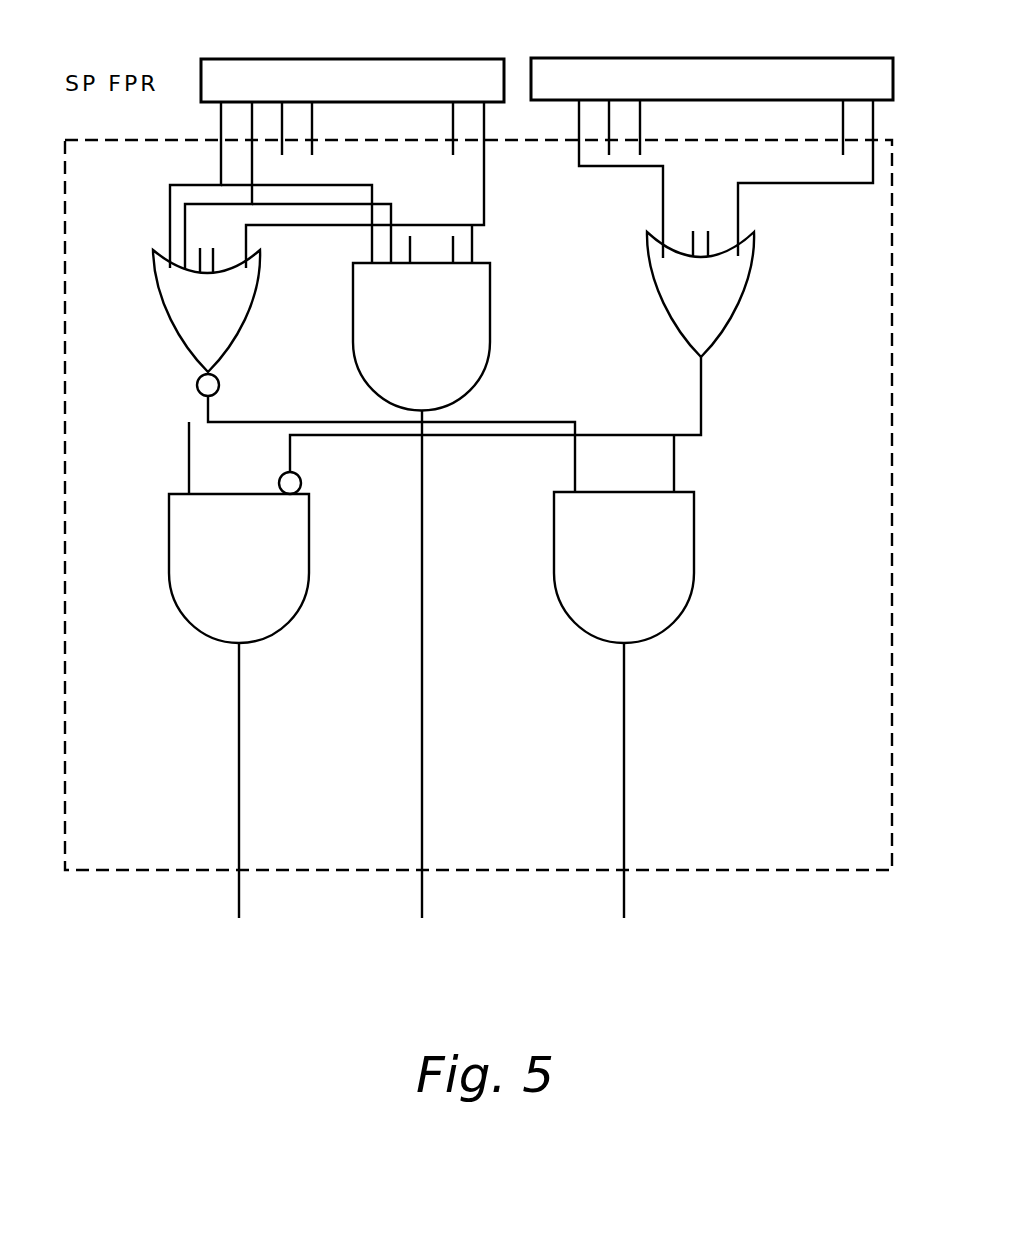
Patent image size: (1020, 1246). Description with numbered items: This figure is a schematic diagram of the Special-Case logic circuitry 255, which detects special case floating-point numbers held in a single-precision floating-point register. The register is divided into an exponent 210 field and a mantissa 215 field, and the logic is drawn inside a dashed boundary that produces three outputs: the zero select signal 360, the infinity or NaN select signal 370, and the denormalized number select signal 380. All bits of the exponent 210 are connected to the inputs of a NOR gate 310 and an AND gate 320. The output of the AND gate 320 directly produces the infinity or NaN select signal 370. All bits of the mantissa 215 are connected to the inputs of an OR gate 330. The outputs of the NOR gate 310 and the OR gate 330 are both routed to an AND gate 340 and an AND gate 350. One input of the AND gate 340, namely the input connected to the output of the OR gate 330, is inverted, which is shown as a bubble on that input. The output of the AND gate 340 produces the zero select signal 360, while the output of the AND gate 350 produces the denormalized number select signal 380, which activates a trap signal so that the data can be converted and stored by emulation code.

The exponent 210 is at (487, 59).
The mantissa 215 is at (877, 59).
The Special-Case logic circuitry 255 is at (826, 870).
The NOR gate 310 is at (233, 350).
The AND gate 320 is at (492, 338).
The OR gate 330 is at (733, 322).
The AND gate 340 is at (310, 583).
The AND gate 350 is at (694, 583).
The zero select signal 360 is at (239, 758).
The infinity or NaN select signal 370 is at (422, 640).
The denormalized number select signal 380 is at (624, 758).